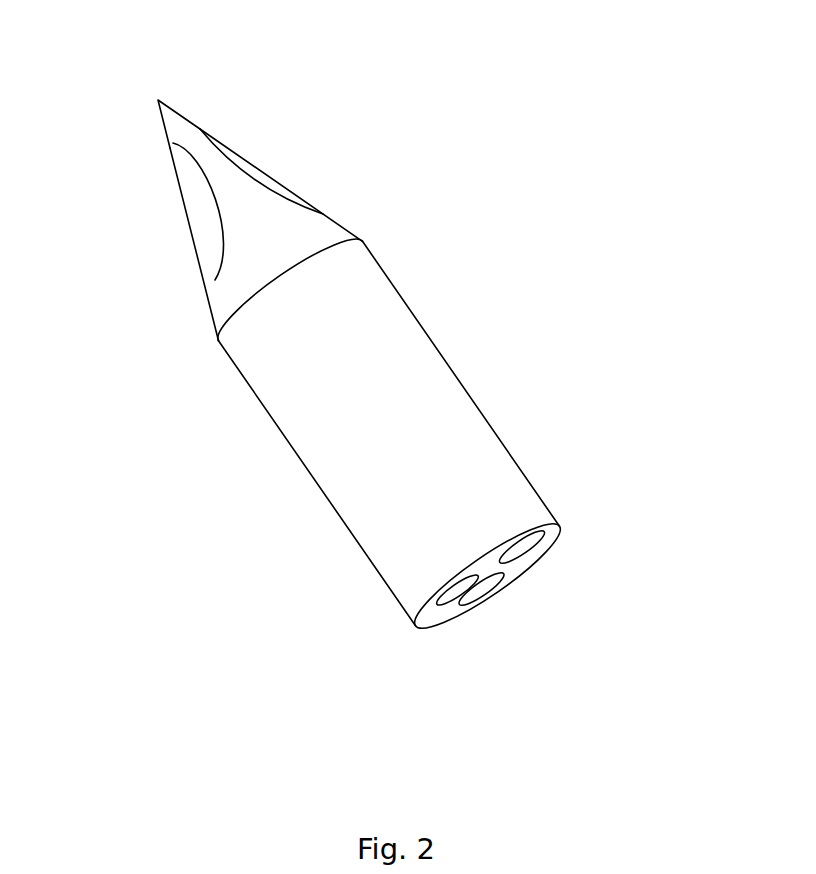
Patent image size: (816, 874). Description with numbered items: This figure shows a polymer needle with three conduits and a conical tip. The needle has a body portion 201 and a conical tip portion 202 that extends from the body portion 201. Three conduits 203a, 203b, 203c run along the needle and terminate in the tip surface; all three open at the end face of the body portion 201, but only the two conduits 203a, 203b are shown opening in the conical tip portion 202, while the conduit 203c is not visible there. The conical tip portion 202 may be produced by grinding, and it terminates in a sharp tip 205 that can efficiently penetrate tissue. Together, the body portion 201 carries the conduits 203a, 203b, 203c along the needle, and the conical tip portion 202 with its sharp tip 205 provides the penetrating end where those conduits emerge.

The body portion 201 is at (461, 425).
The conical tip portion 202 is at (287, 243).
The conduit 203a is at (205, 208).
The conduit 203b is at (242, 162).
The conduit 203c is at (485, 593).
The sharp tip 205 is at (158, 100).